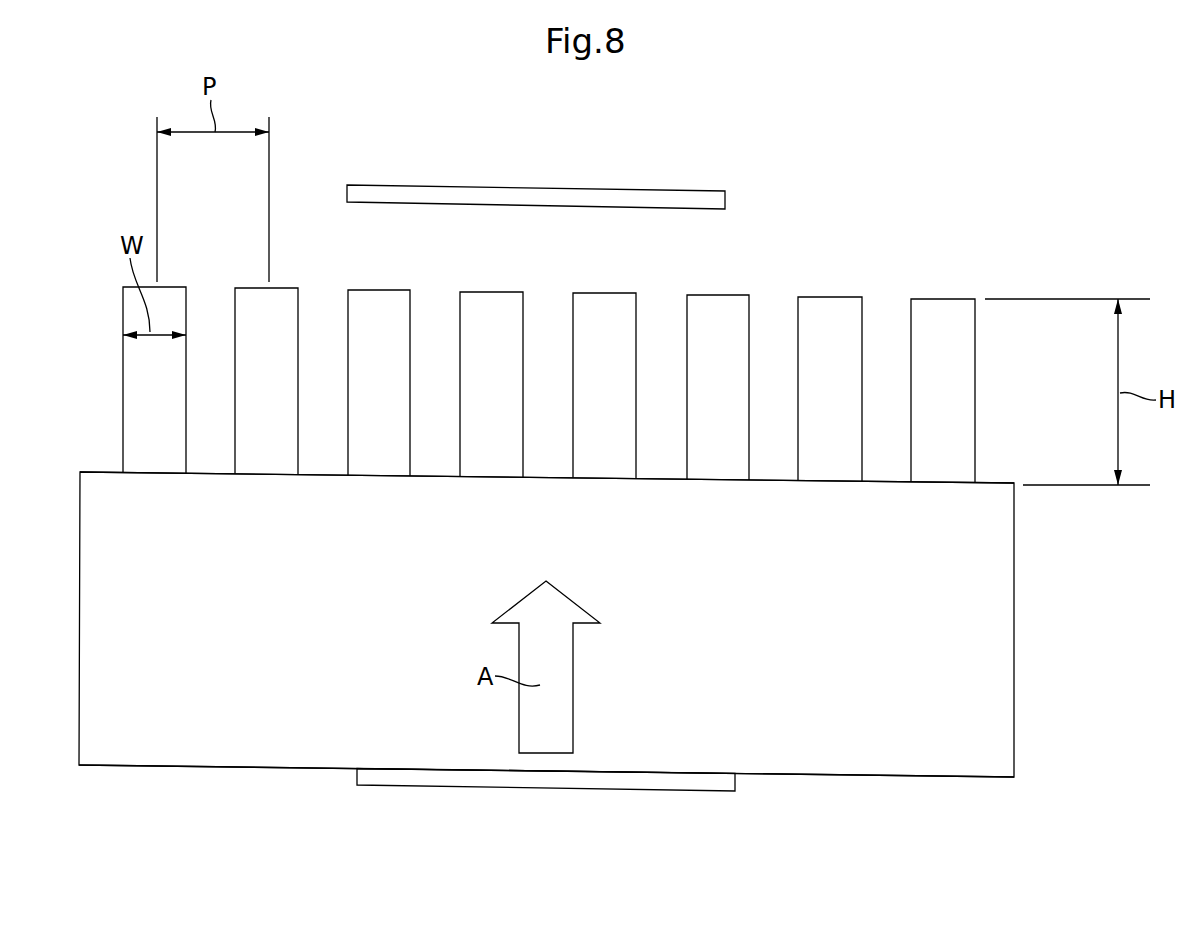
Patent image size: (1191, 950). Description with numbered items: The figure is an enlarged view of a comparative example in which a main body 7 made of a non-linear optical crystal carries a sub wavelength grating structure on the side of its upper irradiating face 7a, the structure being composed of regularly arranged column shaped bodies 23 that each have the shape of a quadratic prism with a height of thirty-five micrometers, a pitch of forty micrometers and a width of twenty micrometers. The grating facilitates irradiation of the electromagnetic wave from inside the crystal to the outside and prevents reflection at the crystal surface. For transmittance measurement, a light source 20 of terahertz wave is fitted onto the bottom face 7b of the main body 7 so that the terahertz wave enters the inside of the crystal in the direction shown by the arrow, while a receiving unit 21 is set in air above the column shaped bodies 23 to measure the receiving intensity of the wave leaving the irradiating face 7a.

The main body 7 is at (1000, 632).
The irradiating face 7a is at (1008, 482).
The bottom face 7b is at (961, 777).
The light source 20 is at (690, 781).
The receiving unit 21 is at (598, 200).
The column shaped body 23 is at (851, 280).